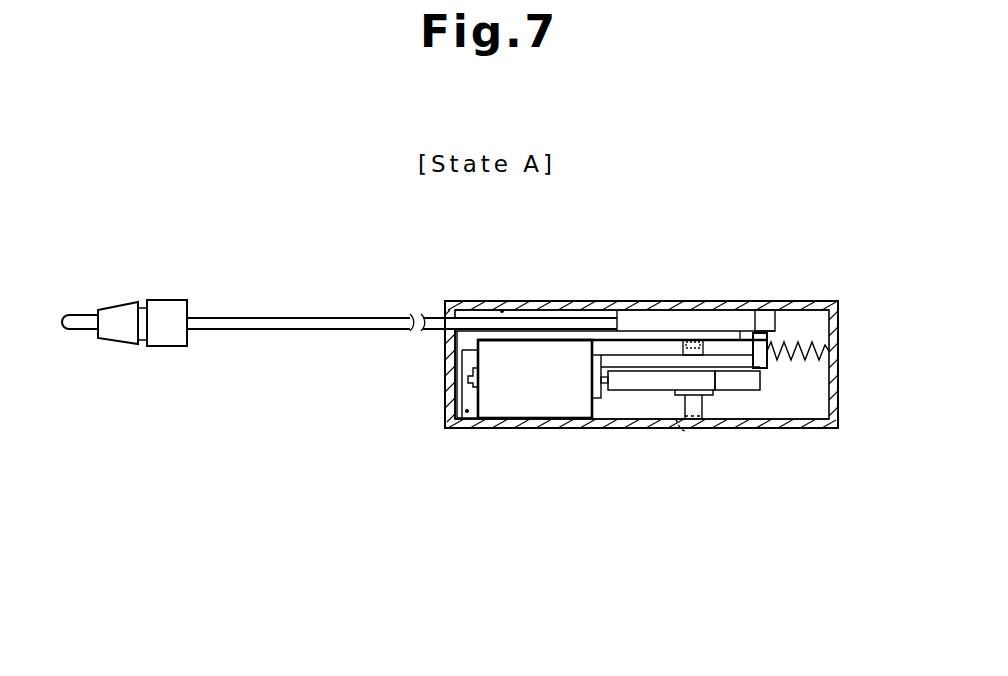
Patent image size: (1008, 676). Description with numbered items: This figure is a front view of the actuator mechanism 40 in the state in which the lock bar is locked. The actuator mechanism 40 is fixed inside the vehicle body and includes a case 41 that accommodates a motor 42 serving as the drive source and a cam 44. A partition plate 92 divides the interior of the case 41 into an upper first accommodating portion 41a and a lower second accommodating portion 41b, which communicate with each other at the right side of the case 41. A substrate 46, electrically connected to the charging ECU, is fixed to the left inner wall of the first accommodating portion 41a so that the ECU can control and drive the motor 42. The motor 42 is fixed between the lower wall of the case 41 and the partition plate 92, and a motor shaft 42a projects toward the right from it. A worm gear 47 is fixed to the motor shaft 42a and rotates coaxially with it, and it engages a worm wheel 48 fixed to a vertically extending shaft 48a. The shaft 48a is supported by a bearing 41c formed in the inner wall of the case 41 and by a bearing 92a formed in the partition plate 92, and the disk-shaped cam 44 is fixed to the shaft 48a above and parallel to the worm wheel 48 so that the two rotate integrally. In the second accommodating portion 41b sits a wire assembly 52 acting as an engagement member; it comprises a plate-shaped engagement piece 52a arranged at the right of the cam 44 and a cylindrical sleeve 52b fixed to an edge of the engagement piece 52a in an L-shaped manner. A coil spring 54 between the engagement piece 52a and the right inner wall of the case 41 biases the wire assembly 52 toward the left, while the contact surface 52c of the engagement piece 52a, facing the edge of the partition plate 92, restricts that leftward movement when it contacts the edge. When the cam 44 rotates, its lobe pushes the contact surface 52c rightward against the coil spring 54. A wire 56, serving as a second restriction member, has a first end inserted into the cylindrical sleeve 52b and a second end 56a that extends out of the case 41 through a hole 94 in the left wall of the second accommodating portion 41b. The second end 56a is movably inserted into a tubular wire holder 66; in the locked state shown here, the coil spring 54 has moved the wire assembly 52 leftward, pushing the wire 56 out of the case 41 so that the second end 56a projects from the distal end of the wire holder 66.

The actuator mechanism 40 is at (745, 248).
The case 41 is at (460, 302).
The first accommodating portion 41a is at (467, 411).
The second accommodating portion 41b is at (502, 303).
The bearing 41c is at (683, 420).
The motor 42 is at (470, 355).
The motor shaft 42a is at (593, 375).
The cam 44 is at (592, 358).
The substrate 46 is at (468, 380).
The worm gear 47 is at (630, 390).
The worm wheel 48 is at (747, 387).
The shaft 48a is at (705, 405).
The wire assembly 52 is at (627, 303).
The engagement piece 52a is at (768, 368).
The cylindrical sleeve 52b is at (773, 323).
The contact surface 52c is at (748, 330).
The coil spring 54 is at (828, 342).
The wire 56 is at (332, 317).
The second end 56a is at (83, 315).
The wire holder 66 is at (172, 305).
The partition plate 92 is at (557, 320).
The bearing 92a is at (678, 337).
The hole 94 is at (447, 320).